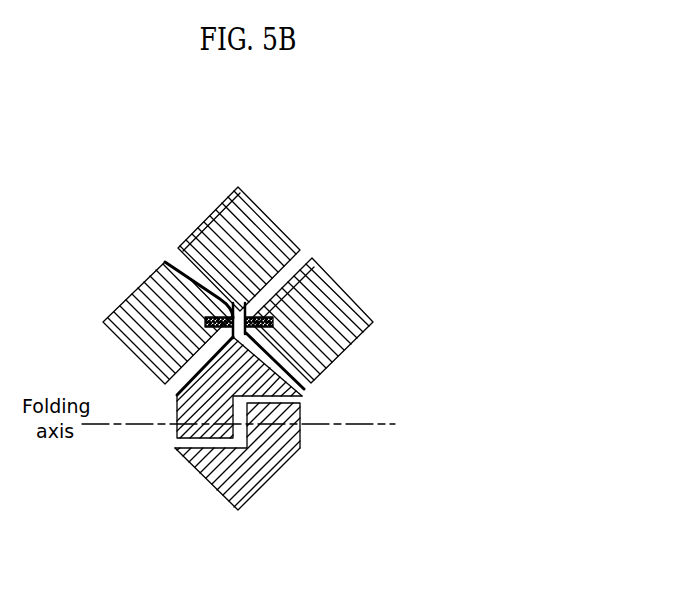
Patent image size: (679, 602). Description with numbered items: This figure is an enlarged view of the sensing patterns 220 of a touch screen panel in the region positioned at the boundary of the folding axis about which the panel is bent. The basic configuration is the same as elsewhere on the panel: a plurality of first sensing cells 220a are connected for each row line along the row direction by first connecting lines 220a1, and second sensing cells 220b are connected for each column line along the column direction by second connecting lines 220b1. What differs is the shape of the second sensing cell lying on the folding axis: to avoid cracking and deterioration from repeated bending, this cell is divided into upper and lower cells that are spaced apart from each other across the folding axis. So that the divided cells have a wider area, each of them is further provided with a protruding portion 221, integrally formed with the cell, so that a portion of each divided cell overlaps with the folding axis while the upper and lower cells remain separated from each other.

The sensing pattern 220 is at (360, 165).
The first sensing cell 220a is at (340, 298).
The first connecting line 220a1 is at (304, 390).
The second sensing cell 220b is at (231, 285).
The second connecting line 220b1 is at (172, 262).
The protruding portion 221 is at (177, 438).